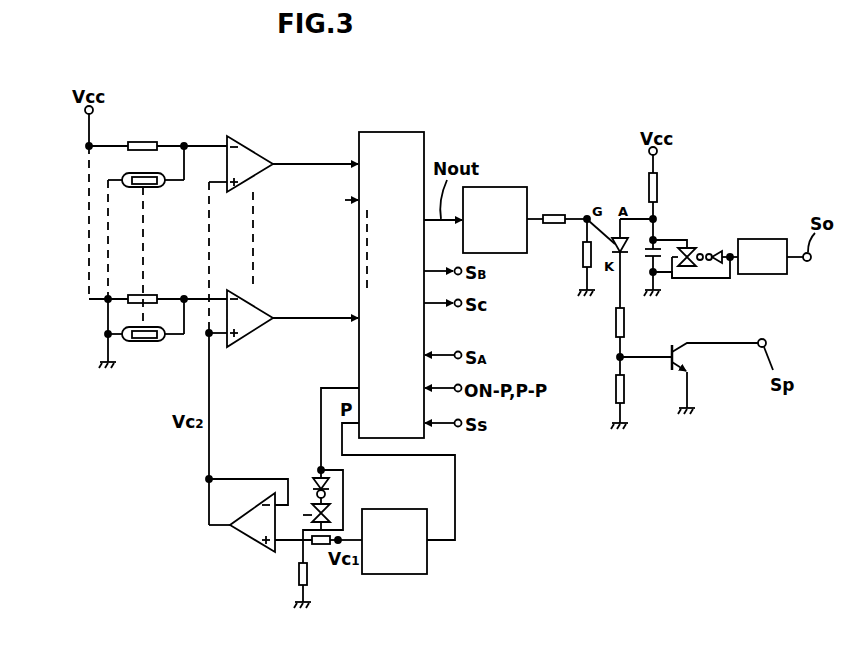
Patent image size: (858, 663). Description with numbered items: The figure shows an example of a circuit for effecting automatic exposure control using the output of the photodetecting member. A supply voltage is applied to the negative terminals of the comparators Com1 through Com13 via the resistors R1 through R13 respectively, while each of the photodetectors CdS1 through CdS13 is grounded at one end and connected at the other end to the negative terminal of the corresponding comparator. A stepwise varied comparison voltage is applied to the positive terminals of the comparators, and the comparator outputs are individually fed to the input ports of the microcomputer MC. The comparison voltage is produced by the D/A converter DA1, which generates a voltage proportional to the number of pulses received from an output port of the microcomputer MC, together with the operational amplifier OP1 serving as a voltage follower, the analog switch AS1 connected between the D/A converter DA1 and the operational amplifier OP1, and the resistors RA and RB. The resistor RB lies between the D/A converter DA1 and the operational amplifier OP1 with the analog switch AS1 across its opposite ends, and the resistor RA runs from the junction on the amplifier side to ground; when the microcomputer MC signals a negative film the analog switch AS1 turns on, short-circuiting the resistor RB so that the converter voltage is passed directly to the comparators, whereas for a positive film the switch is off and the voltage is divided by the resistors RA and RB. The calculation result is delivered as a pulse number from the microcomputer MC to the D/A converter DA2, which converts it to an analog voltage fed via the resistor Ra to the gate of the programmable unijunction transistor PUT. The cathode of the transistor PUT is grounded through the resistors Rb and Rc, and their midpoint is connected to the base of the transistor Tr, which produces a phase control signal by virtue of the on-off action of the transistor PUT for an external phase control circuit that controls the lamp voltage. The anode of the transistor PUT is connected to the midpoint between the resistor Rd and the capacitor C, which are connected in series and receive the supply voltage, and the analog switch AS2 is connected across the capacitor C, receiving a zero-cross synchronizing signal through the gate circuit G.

The resistor R1 is at (152, 142).
The resistor R13 is at (148, 295).
The photodetector CdS1 is at (147, 189).
The photodetector CdS13 is at (138, 342).
The comparator Com1 is at (253, 147).
The comparator Com13 is at (245, 340).
The microcomputer MC is at (410, 132).
The operational amplifier OP1 is at (249, 519).
The resistor RA is at (296, 581).
The resistor RB is at (321, 545).
The D/A converter DA1 is at (394, 541).
The D/A converter DA2 is at (495, 220).
The analog switch AS1 is at (306, 489).
The analog switch AS2 is at (701, 238).
The resistor Ra is at (546, 215).
The resistor Rb is at (623, 311).
The resistor Rc is at (624, 394).
The resistor Rd is at (658, 181).
The programmable unijunction transistor PUT is at (612, 200).
The capacitor C is at (646, 255).
The gate circuit G is at (762, 256).
The transistor Tr is at (683, 343).